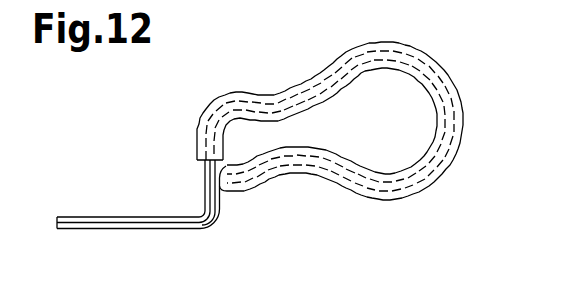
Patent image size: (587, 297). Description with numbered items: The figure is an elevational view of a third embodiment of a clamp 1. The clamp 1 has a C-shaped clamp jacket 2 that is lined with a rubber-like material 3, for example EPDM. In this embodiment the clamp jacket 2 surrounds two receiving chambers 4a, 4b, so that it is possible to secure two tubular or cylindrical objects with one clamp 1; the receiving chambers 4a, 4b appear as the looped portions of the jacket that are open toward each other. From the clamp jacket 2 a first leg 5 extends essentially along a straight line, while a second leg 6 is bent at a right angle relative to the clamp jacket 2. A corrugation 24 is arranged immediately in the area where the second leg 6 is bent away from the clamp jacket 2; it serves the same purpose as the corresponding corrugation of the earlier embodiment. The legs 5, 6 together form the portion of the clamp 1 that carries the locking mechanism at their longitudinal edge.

The clamp 1 is at (347, 124).
The clamp jacket 2 is at (433, 168).
The rubber-like material 3 is at (452, 102).
The receiving chamber 4a is at (418, 110).
The receiving chamber 4b is at (280, 150).
The first leg 5 is at (83, 230).
The second leg 6 is at (77, 216).
The corrugation 24 is at (203, 212).